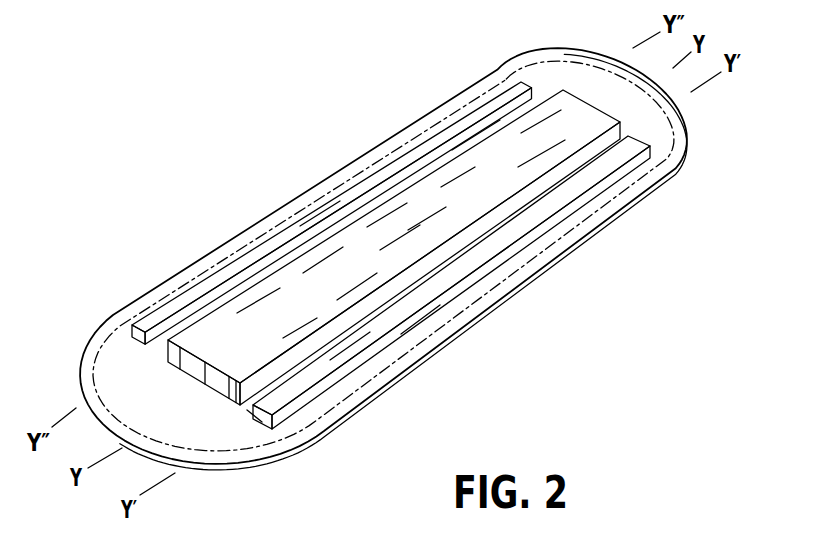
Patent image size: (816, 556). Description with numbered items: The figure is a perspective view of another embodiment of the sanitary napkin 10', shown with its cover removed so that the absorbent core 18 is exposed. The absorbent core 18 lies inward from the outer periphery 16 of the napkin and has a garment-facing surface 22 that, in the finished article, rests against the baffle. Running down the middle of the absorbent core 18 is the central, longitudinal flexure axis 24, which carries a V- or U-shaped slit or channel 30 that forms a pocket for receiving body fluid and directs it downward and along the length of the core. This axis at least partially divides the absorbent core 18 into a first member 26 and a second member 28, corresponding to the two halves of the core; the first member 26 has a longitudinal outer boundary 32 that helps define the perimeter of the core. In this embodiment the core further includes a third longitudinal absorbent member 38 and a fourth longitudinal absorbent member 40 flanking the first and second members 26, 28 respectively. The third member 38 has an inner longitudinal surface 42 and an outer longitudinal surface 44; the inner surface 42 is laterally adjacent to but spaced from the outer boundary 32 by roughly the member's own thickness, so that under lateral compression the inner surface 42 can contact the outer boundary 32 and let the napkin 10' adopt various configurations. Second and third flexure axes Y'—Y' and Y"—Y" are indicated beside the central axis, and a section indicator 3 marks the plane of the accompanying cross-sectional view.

The sanitary napkin 10' is at (265, 93).
The section line 3- 3 is at (354, 122).
The outer periphery 16 is at (566, 248).
The absorbent core 18 is at (268, 229).
The garment-facing surface 22 is at (293, 412).
The central longitudinal flexure axis 24 is at (484, 167).
The first member 26 is at (244, 386).
The second member 28 is at (173, 353).
The slit or channel 30 is at (203, 383).
The longitudinal outer boundary 32 is at (234, 395).
The third longitudinal absorbent member 38 is at (327, 363).
The fourth longitudinal absorbent member 40 is at (197, 293).
The inner longitudinal surface 42 is at (247, 410).
The outer longitudinal surface 44 is at (401, 334).